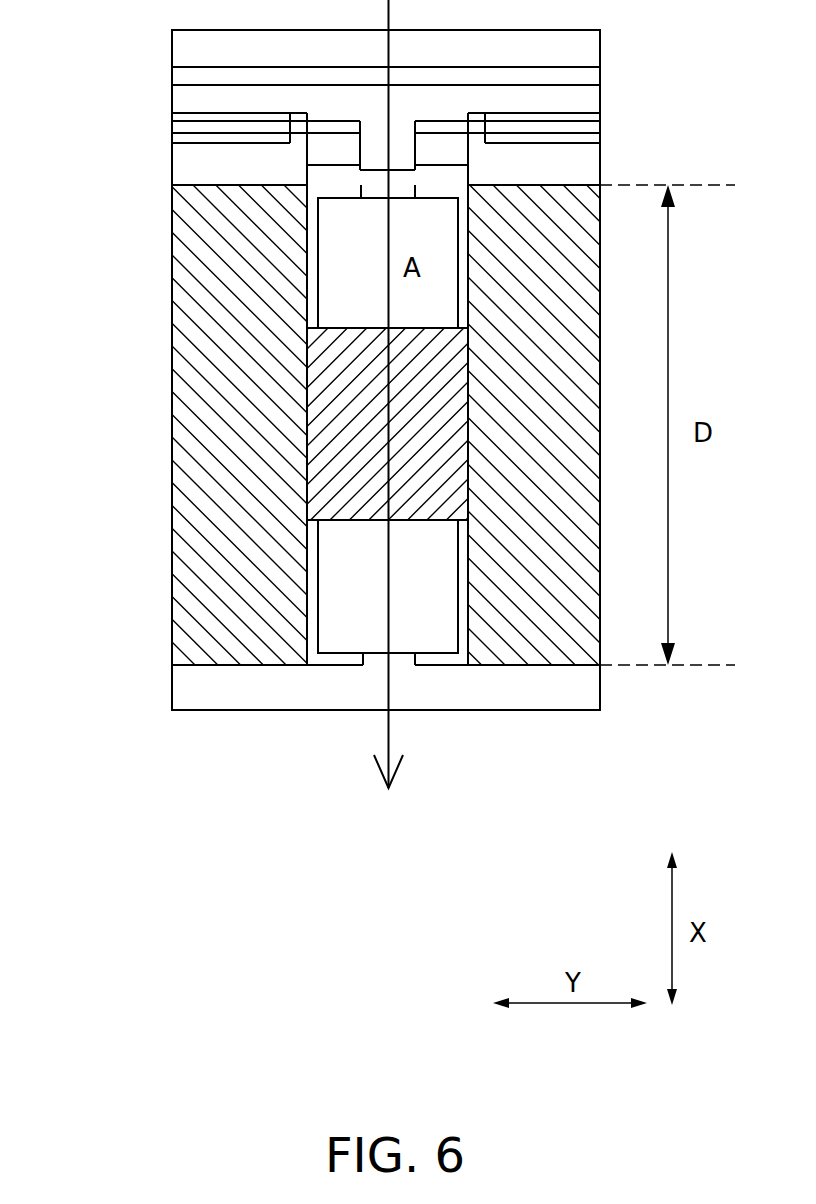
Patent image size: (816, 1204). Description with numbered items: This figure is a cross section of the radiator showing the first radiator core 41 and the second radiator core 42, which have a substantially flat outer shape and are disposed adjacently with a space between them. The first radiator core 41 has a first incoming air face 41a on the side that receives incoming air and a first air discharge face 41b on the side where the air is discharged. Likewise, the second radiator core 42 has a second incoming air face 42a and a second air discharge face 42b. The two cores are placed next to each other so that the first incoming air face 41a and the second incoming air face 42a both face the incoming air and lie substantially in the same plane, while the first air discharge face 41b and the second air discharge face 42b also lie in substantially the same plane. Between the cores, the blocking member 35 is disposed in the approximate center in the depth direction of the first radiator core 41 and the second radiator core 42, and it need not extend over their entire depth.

The blocking member 35 is at (419, 474).
The first radiator core 41 is at (222, 400).
The first incoming air face 41a is at (208, 185).
The first air discharge face 41b is at (210, 665).
The second radiator core 42 is at (553, 437).
The second incoming air face 42a is at (553, 185).
The second air discharge face 42b is at (550, 665).